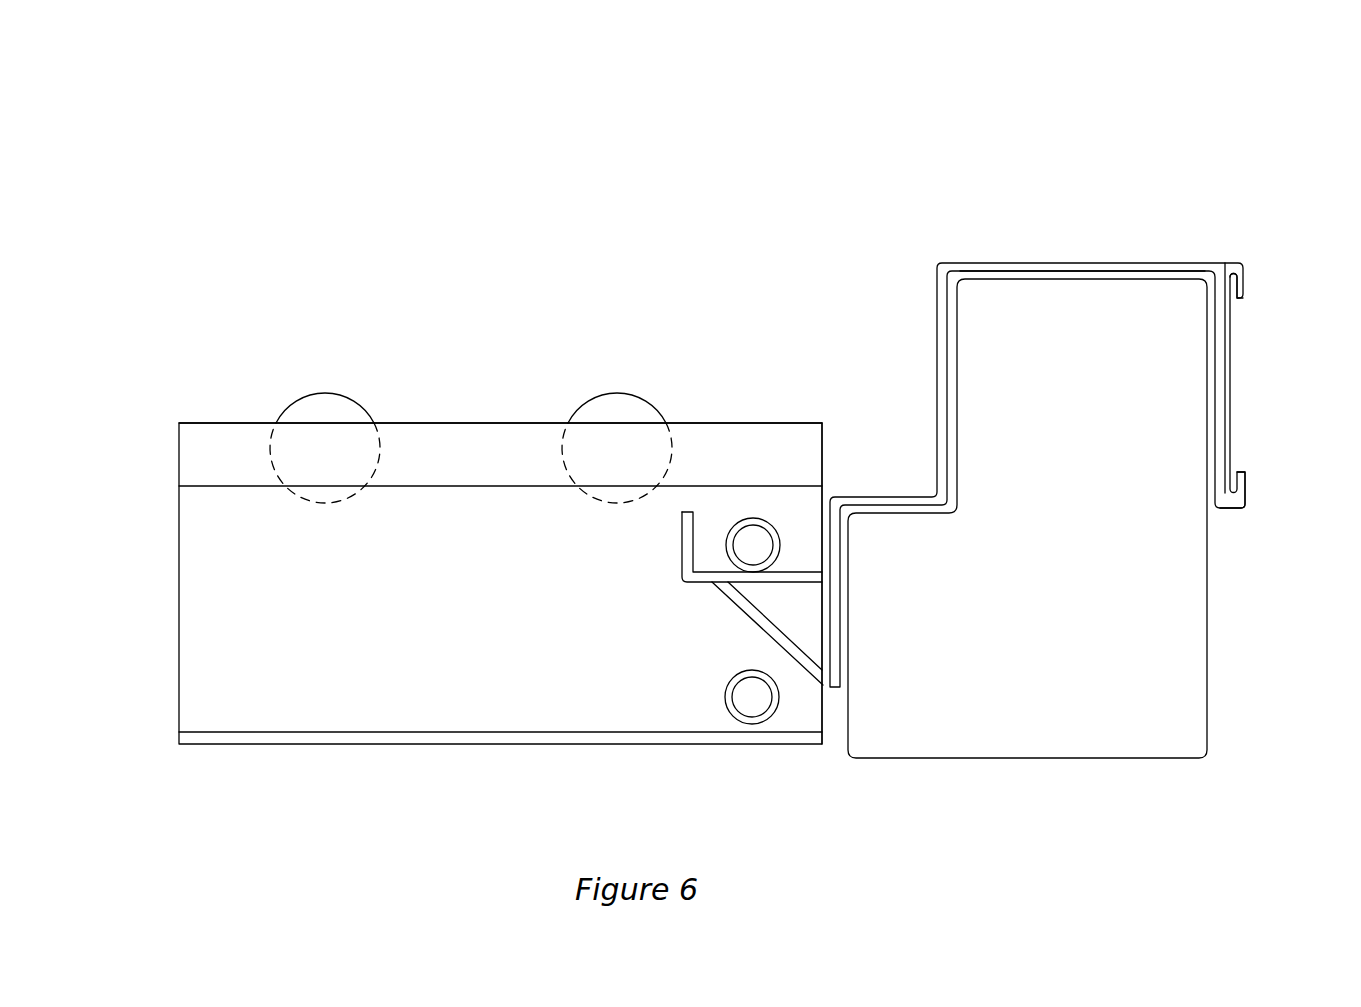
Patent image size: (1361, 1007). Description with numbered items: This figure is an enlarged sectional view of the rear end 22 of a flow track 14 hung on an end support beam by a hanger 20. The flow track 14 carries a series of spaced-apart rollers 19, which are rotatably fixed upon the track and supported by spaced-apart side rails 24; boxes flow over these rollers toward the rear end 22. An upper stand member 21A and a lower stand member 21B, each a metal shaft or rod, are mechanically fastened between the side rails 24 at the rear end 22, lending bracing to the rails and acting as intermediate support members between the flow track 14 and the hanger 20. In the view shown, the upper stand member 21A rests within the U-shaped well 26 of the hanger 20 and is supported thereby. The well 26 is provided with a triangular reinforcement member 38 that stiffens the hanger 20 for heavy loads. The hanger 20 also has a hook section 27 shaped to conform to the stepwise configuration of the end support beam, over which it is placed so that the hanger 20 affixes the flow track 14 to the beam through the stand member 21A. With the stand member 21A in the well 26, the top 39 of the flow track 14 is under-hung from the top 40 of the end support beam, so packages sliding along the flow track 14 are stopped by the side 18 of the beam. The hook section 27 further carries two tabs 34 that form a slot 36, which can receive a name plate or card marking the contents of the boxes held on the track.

The flow track 14 is at (405, 355).
The side of the end support beam 18 is at (950, 312).
The rollers 19 is at (325, 393).
The hanger 20 is at (1243, 178).
The upper stand member 21A is at (763, 522).
The lower stand member 21B is at (760, 713).
The rear end 22 is at (840, 417).
The side rails 24 is at (203, 447).
The U-shaped well 26 is at (708, 563).
The hook section 27 is at (996, 250).
The tabs 34 is at (1244, 265).
The slot 36 is at (1240, 323).
The triangular reinforcement member 38 is at (738, 611).
The top of the flow track 39 is at (735, 423).
The top of the end support beam 40 is at (1070, 281).